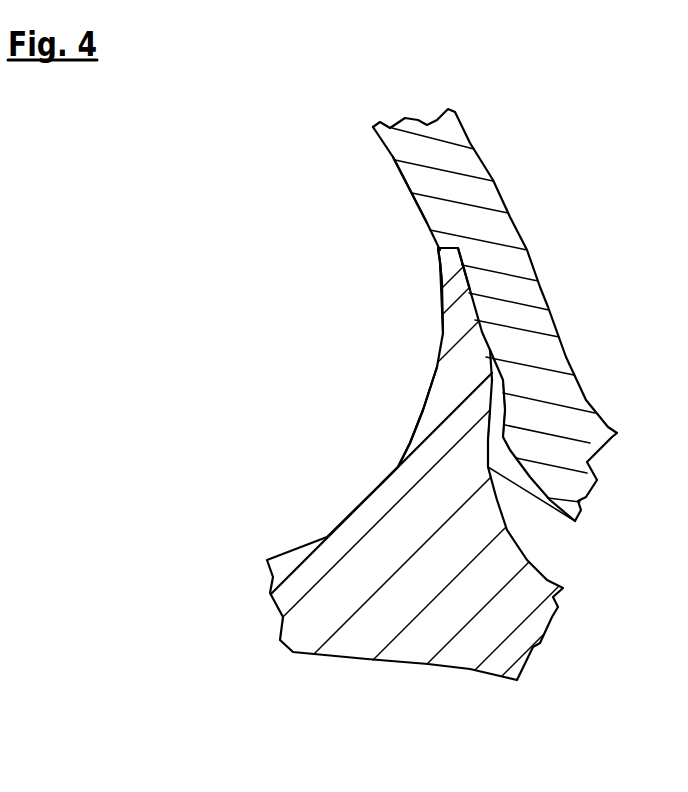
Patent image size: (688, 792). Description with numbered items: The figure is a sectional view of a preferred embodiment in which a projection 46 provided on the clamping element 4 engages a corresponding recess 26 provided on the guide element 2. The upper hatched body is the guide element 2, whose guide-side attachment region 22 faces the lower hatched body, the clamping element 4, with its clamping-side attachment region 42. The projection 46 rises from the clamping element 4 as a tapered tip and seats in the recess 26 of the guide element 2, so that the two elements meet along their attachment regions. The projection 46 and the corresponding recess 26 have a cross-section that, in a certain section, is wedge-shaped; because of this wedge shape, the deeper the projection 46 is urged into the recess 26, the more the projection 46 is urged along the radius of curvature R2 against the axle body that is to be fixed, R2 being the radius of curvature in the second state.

The guide element 2 is at (460, 158).
The clamping element 4 is at (351, 643).
The guide-side attachment region 22 is at (405, 183).
The radius of curvature in the second state R2 is at (430, 276).
The projection 46 is at (453, 328).
The clamping-side attachment region 42 is at (384, 478).
The recess 26 is at (500, 408).